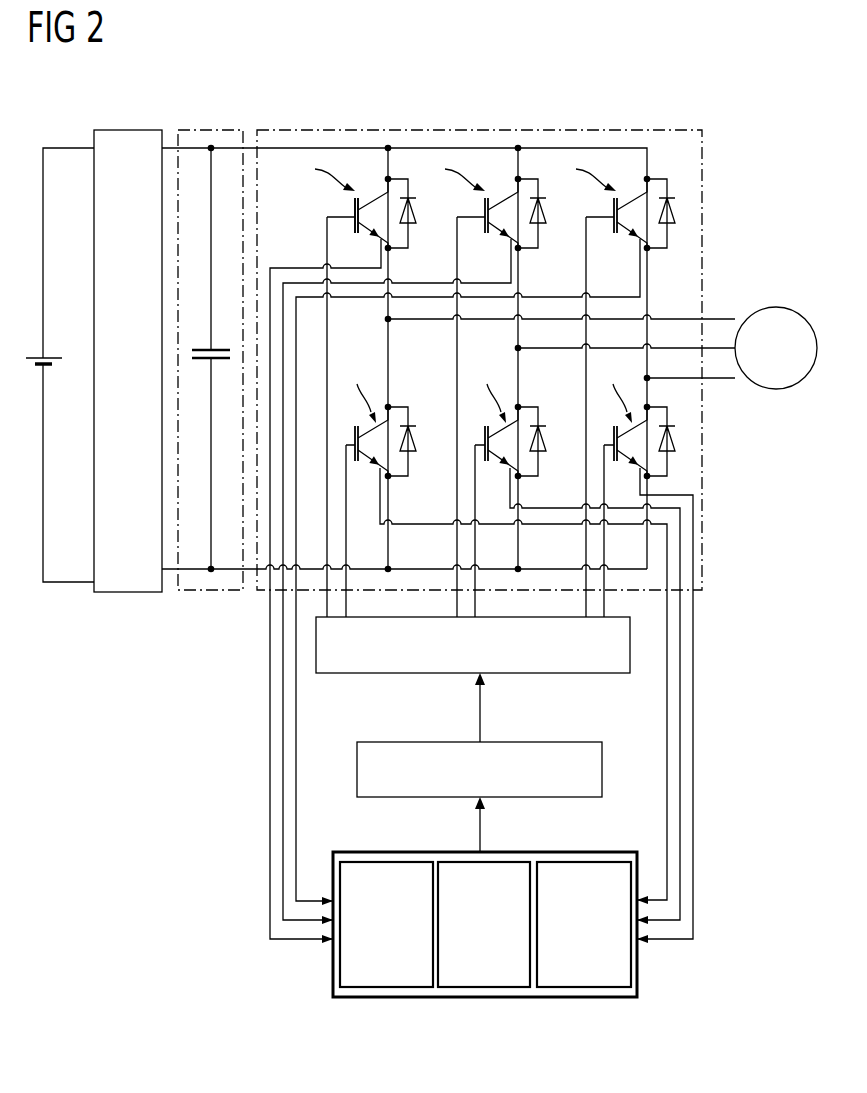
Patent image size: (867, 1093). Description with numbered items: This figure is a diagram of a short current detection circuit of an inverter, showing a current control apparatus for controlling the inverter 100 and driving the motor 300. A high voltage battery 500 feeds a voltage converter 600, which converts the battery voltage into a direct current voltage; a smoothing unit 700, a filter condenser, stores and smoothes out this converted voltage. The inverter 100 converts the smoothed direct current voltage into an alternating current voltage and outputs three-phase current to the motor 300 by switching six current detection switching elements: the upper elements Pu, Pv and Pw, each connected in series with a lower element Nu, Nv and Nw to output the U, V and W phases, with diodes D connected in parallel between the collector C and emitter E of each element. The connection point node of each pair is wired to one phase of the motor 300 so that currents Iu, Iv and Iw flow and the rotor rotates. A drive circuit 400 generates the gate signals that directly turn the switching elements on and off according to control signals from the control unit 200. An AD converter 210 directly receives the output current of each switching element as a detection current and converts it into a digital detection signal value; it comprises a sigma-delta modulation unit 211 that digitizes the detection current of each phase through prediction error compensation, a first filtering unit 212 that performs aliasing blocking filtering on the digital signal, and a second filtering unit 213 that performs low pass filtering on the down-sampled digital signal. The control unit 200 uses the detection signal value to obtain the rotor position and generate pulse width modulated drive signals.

The inverter 100 is at (487, 130).
The control unit 200 is at (550, 742).
The AD converter 210 is at (518, 950).
The sigma-delta modulation unit 211 is at (385, 998).
The first filtering unit 212 is at (483, 998).
The second filtering unit 213 is at (583, 998).
The motor 300 is at (777, 307).
The drive circuit 400 is at (397, 675).
The high voltage battery 500 is at (52, 357).
The voltage converter 600 is at (128, 130).
The smoothing unit 700 is at (215, 130).